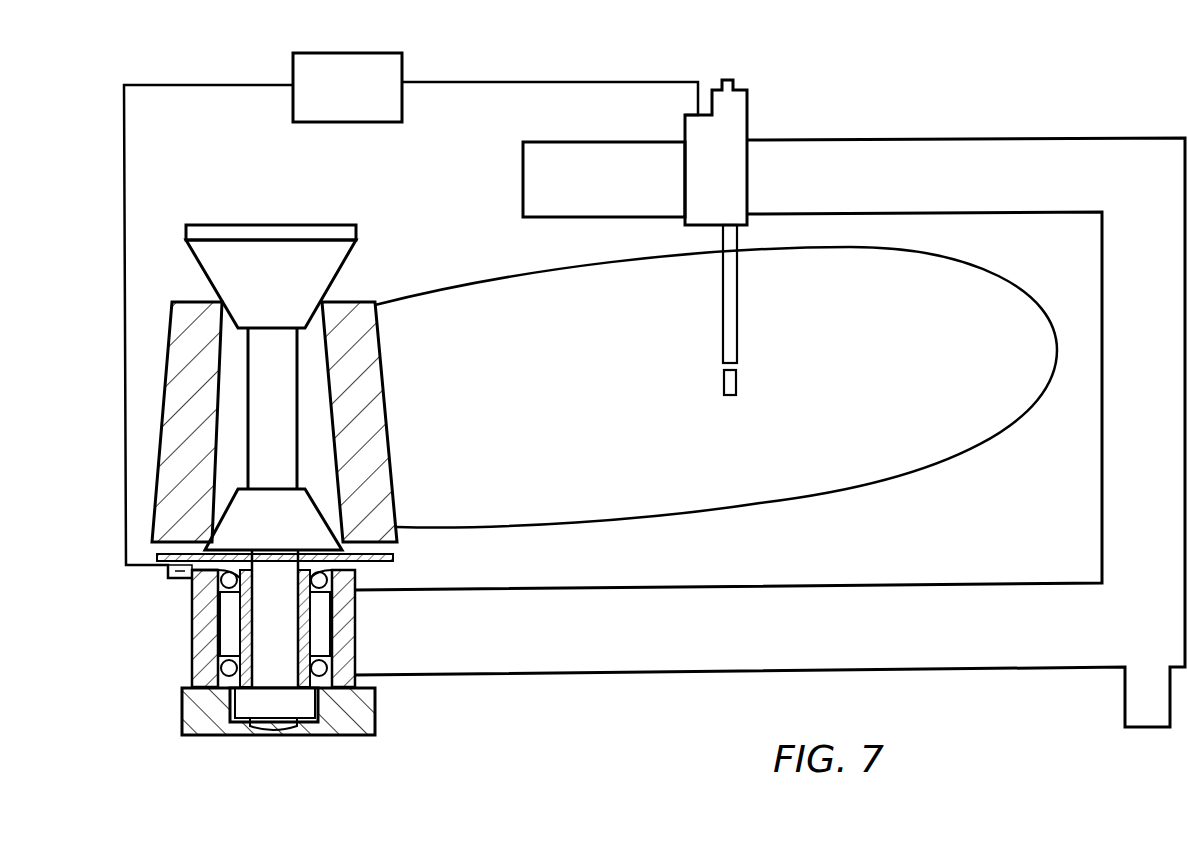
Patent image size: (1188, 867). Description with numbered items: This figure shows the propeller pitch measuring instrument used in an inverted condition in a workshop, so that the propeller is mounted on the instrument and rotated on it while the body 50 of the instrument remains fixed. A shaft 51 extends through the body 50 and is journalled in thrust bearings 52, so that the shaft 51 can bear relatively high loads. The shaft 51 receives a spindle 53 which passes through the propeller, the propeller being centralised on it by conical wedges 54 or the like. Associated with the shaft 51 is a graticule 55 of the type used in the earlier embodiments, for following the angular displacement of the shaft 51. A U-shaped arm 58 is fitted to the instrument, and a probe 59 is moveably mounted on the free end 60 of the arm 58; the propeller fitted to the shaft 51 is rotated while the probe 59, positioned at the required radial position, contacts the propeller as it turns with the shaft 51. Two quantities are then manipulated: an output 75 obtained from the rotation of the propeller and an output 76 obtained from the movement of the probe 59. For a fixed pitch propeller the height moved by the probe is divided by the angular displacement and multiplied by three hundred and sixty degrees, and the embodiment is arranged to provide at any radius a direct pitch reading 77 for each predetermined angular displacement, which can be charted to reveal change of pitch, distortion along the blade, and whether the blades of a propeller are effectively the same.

The body 50 is at (186, 634).
The shaft 51 is at (232, 637).
The thrust bearings 52 is at (197, 598).
The spindle 53 is at (283, 395).
The conical wedges 54 is at (222, 262).
The graticule 55 is at (368, 573).
The arm 58 is at (575, 648).
The probe 59 is at (749, 116).
The free end 60 is at (520, 181).
The output 75 is at (126, 177).
The output 76 is at (697, 92).
The direct pitch reading 77 is at (403, 95).